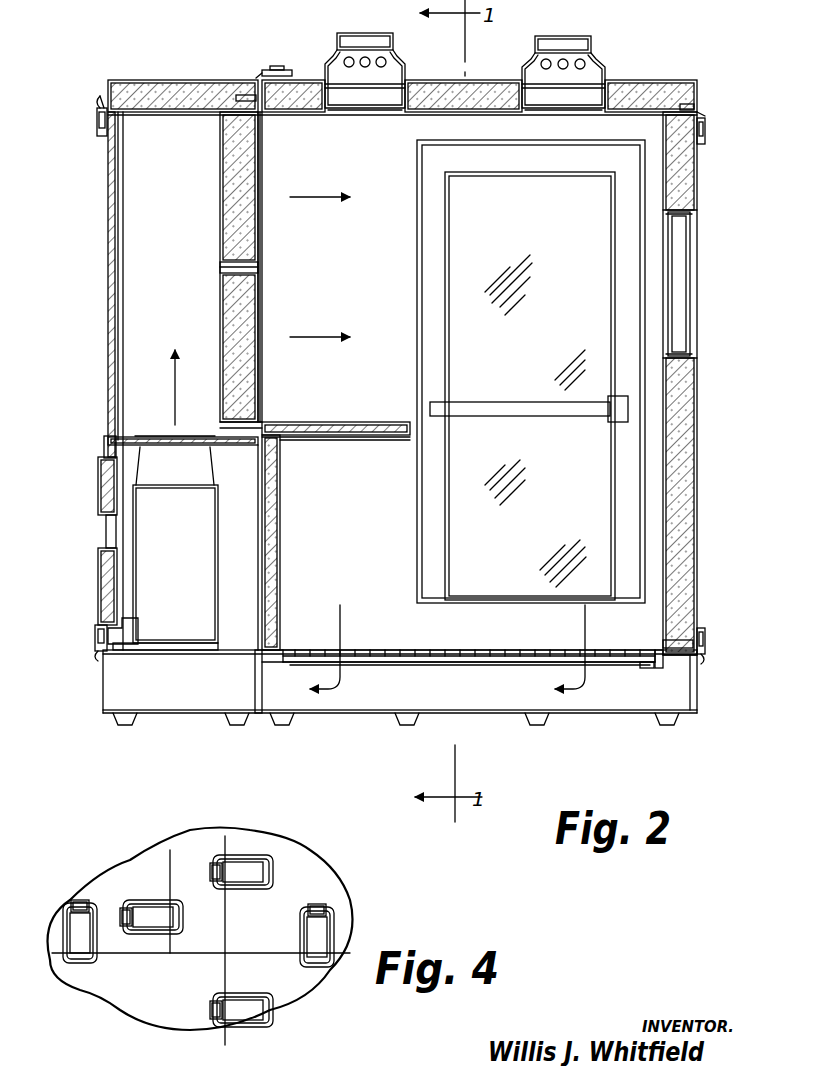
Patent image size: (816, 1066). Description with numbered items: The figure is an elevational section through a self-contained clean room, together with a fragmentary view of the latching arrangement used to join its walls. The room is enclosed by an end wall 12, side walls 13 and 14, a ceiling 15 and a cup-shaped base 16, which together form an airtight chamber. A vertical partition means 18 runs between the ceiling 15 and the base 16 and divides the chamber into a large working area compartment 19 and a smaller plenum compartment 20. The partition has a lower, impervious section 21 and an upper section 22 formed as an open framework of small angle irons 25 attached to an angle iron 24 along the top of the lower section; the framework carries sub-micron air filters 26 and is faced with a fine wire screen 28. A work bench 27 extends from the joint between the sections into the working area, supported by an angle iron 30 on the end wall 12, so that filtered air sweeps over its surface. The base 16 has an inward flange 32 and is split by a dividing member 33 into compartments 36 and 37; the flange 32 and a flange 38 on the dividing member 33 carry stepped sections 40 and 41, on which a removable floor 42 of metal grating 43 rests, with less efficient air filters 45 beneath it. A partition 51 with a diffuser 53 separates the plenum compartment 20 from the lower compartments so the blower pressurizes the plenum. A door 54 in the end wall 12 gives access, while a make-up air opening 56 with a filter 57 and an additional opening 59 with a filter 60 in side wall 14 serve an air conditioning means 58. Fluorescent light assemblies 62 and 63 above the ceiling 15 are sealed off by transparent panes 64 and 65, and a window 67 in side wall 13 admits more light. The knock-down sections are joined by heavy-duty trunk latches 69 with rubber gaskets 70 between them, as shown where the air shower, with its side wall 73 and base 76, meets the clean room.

In FIG. 2, the end wall 12 is at (382, 170).
In FIG. 4, the end wall 12 is at (182, 850).
In FIG. 2, the side wall 13 is at (690, 398).
In FIG. 4, the side wall 13 is at (110, 876).
In FIG. 2, the side wall 14 is at (108, 206).
In FIG. 2, the ceiling 15 is at (667, 88).
In FIG. 2, the base 16 is at (606, 716).
In FIG. 4, the base 16 is at (128, 1008).
In FIG. 2, the vertical partition means 18 is at (266, 305).
In FIG. 2, the working area compartment 19 is at (385, 247).
In FIG. 2, the plenum compartment 20 is at (182, 230).
In FIG. 2, the lower partition section 21 is at (280, 541).
In FIG. 2, the upper partition section 22 is at (270, 265).
In FIG. 2, the angle iron flange 24 is at (250, 448).
In FIG. 2, the angle irons 25 is at (223, 267).
In FIG. 2, the sub-micron air filter 26 is at (222, 162).
In FIG. 2, the work bench 27 is at (360, 420).
In FIG. 2, the wire screen 28 is at (263, 378).
In FIG. 2, the angle iron 30 is at (346, 438).
In FIG. 2, the flange 32 is at (686, 667).
In FIG. 2, the dividing member 33 is at (257, 687).
In FIG. 2, the base compartment 36 is at (450, 697).
In FIG. 2, the base compartment 37 is at (160, 685).
In FIG. 2, the flange 38 is at (268, 658).
In FIG. 2, the stepped section 40 is at (664, 668).
In FIG. 2, the stepped section 41 is at (646, 666).
In FIG. 2, the working area floor 42 is at (396, 647).
In FIG. 2, the metal grating 43 is at (493, 649).
In FIG. 2, the air filters 45 is at (552, 650).
In FIG. 2, the partition 51 is at (188, 446).
In FIG. 2, the diffuser 53 is at (154, 436).
In FIG. 2, the door 54 is at (547, 338).
In FIG. 2, the make-up air opening 56 is at (108, 440).
In FIG. 2, the air filter 57 is at (98, 485).
In FIG. 2, the air conditioning means 58 is at (184, 538).
In FIG. 2, the opening 59 is at (104, 535).
In FIG. 2, the filter 60 is at (98, 580).
In FIG. 2, the fluorescent light assembly 62 is at (598, 58).
In FIG. 2, the fluorescent light assembly 63 is at (355, 36).
In FIG. 2, the transparent pane 64 is at (568, 110).
In FIG. 2, the transparent pane 65 is at (372, 110).
In FIG. 2, the window 67 is at (690, 280).
In FIG. 2, the trunk latch 69 is at (288, 72).
In FIG. 4, the trunk latch 69 is at (298, 933).
In FIG. 2, the rubber gasket 70 is at (250, 94).
In FIG. 4, the side wall 73 is at (312, 890).
In FIG. 4, the base 76 is at (303, 1024).